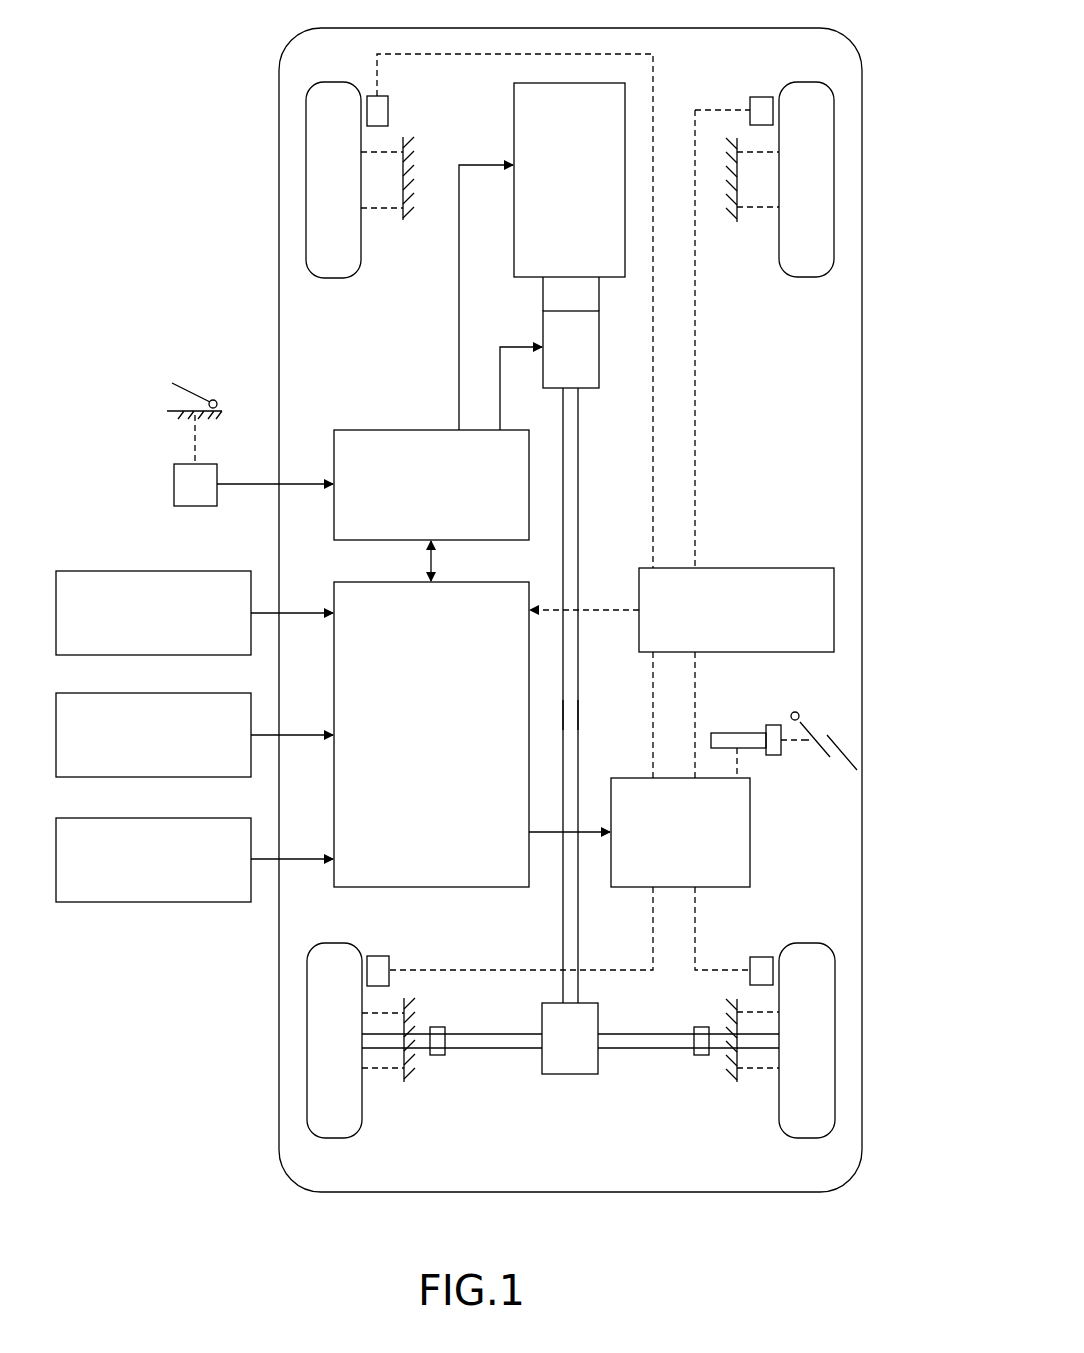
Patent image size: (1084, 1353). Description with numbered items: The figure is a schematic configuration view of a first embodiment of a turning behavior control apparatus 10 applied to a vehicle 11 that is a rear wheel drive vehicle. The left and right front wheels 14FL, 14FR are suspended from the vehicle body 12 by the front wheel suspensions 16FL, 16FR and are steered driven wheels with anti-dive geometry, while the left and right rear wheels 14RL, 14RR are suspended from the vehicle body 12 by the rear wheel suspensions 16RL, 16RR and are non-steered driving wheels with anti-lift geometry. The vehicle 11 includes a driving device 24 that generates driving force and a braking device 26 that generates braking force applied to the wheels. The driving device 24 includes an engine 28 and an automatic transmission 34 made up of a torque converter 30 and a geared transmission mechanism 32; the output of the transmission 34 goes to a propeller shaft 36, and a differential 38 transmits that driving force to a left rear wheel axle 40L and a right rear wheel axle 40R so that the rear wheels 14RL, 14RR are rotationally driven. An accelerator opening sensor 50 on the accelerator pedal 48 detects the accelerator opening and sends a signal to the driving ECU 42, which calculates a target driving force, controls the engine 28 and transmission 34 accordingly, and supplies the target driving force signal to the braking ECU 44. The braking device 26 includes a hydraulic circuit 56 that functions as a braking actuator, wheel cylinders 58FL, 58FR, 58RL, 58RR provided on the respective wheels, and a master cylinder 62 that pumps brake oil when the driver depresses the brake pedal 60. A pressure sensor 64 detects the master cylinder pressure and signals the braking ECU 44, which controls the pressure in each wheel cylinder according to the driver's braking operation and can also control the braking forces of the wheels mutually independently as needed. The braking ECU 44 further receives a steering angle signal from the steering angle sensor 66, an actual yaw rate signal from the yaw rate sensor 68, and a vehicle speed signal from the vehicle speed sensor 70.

The turning behavior control apparatus 10 is at (629, 44).
The vehicle 11 is at (275, 58).
The vehicle body 12 is at (412, 168).
The left front wheel 14FL is at (306, 180).
The right front wheel 14FR is at (834, 180).
The left rear wheel 14RL is at (307, 1080).
The right rear wheel 14RR is at (835, 1045).
The front wheel suspension 16FL is at (388, 208).
The front wheel suspension 16FR is at (752, 208).
The rear wheel suspension 16RL is at (390, 1068).
The rear wheel suspension 16RR is at (755, 1068).
The driving device 24 is at (467, 279).
The braking device 26 is at (846, 705).
The engine 28 is at (569, 180).
The torque converter 30 is at (543, 296).
The geared transmission mechanism 32 is at (599, 362).
The automatic transmission 34 is at (590, 398).
The propeller shaft 36 is at (578, 713).
The differential 38 is at (568, 1074).
The left rear wheel axle 40L is at (470, 1042).
The right rear wheel axle 40R is at (660, 1042).
The driving electronic control unit 42 is at (431, 505).
The braking electronic control unit 44 is at (486, 734).
The accelerator pedal 48 is at (185, 387).
The accelerator opening sensor 50 is at (174, 489).
The hydraulic circuit 56 is at (680, 832).
The wheel cylinder 58FL is at (416, 90).
The wheel cylinder 58FR is at (760, 97).
The wheel cylinder 58RL is at (378, 956).
The wheel cylinder 58RR is at (761, 957).
The brake pedal 60 is at (842, 748).
The master cylinder 62 is at (740, 733).
The pressure sensor 64 is at (98, 571).
The steering angle sensor 66 is at (128, 693).
The yaw rate sensor 68 is at (150, 902).
The vehicle speed sensor 70 is at (752, 568).